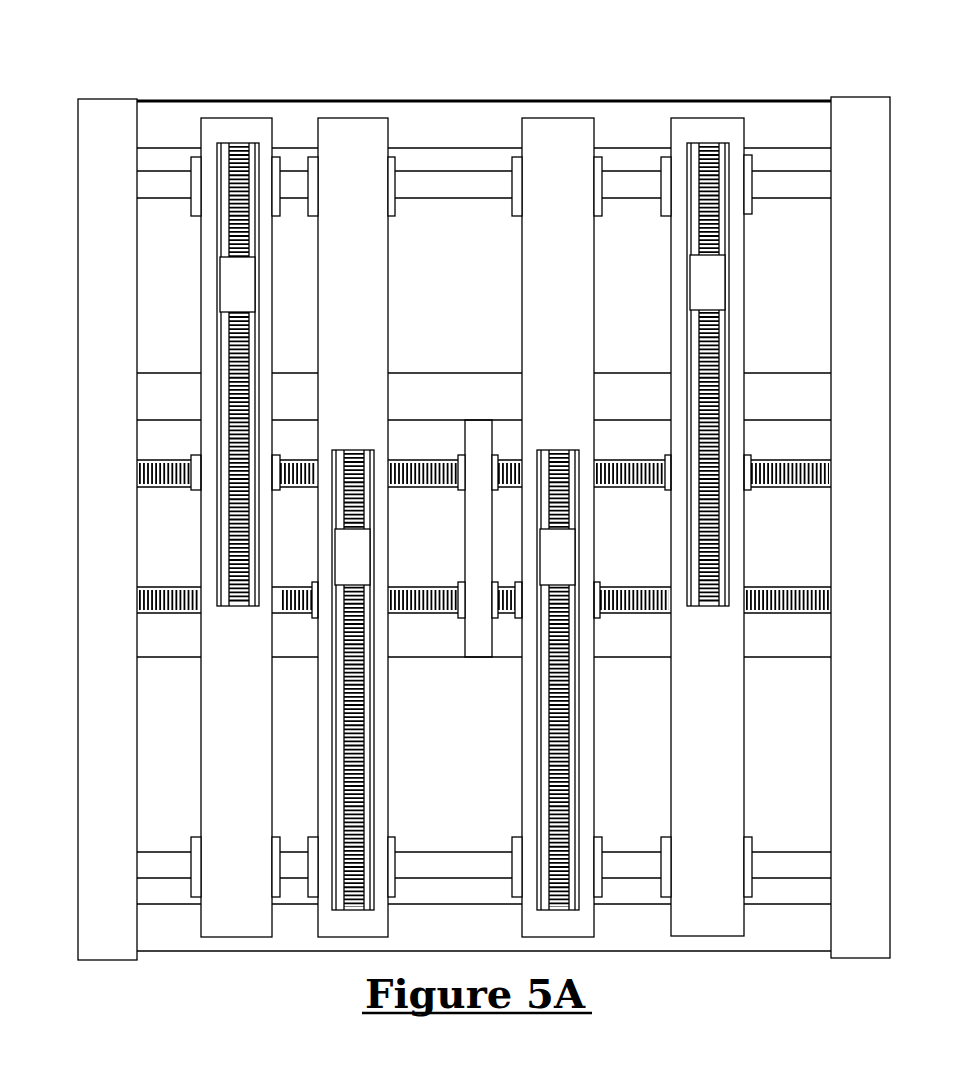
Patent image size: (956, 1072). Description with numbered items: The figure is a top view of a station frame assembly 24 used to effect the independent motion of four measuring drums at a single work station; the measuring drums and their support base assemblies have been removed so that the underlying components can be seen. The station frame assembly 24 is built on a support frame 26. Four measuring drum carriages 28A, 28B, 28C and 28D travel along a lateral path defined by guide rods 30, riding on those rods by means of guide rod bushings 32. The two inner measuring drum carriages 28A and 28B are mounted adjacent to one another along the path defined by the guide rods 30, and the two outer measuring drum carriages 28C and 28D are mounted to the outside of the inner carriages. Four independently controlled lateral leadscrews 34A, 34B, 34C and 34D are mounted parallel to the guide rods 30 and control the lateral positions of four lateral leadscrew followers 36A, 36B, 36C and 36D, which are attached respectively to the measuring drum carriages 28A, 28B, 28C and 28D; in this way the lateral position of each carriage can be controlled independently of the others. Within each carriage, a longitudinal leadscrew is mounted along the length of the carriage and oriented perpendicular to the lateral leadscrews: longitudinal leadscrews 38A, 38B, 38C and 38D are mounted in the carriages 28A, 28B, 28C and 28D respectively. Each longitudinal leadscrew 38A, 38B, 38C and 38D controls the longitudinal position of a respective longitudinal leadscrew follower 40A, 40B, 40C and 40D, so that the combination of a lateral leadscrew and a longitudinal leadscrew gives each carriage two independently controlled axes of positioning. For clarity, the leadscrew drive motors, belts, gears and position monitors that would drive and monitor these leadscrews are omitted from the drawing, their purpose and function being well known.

The station frame assembly 24 is at (481, 31).
The support frame 26 is at (812, 101).
The measuring drum carriage 28A is at (562, 118).
The measuring drum carriage 28B is at (352, 118).
The measuring drum carriage 28C is at (707, 118).
The measuring drum carriage 28D is at (242, 118).
The guide rods 30 is at (462, 199).
The guide rod bushings 32 is at (196, 218).
The lateral leadscrew 34A is at (790, 586).
The lateral leadscrew 34B is at (182, 586).
The lateral leadscrew 34C is at (800, 488).
The lateral leadscrew 34D is at (182, 488).
The lateral leadscrew follower 36A is at (596, 616).
The lateral leadscrew follower 36B is at (390, 616).
The lateral leadscrew follower 36C is at (663, 490).
The lateral leadscrew follower 36D is at (275, 491).
The longitudinal leadscrew 38A is at (580, 770).
The longitudinal leadscrew 38B is at (376, 745).
The longitudinal leadscrew 38C is at (730, 326).
The longitudinal leadscrew 38D is at (222, 338).
The longitudinal leadscrew follower 40A is at (576, 548).
The longitudinal leadscrew follower 40B is at (371, 548).
The longitudinal leadscrew follower 40C is at (726, 290).
The longitudinal leadscrew follower 40D is at (220, 291).